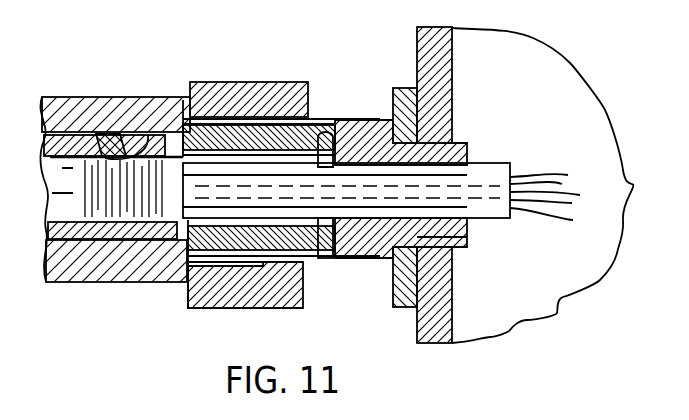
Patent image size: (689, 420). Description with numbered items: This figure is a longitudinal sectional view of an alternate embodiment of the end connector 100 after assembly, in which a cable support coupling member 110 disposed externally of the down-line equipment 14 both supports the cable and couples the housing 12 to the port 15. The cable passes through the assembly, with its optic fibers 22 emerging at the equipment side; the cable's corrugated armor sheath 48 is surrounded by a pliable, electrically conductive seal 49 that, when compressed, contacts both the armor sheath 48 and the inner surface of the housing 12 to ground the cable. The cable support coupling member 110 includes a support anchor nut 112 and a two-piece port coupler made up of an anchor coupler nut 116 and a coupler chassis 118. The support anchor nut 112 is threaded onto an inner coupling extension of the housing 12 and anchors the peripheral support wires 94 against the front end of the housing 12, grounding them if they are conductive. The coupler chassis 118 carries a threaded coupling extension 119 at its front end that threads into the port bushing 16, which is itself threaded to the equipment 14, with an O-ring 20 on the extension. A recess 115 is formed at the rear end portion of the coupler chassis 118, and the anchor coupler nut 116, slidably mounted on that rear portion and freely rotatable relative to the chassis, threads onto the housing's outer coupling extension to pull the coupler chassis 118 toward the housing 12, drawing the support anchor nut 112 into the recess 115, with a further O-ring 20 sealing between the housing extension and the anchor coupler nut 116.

The housing 12 is at (77, 272).
The down-line equipment 14 is at (455, 58).
The port 15 is at (460, 257).
The port bushing 16 is at (405, 87).
The O-ring 20 is at (251, 306).
The optic fibers 22 is at (555, 182).
The corrugated armor sheath 48 is at (148, 135).
The seal 49 is at (107, 132).
The peripheral support wires 94 is at (178, 178).
The end connector 100 is at (336, 68).
The cable support coupling member 110 is at (213, 320).
The support anchor nut 112 is at (313, 277).
The recess 115 is at (333, 130).
The anchor coupler nut 116 is at (246, 80).
The coupler chassis 118 is at (378, 262).
The threaded coupling extension 119 is at (462, 142).